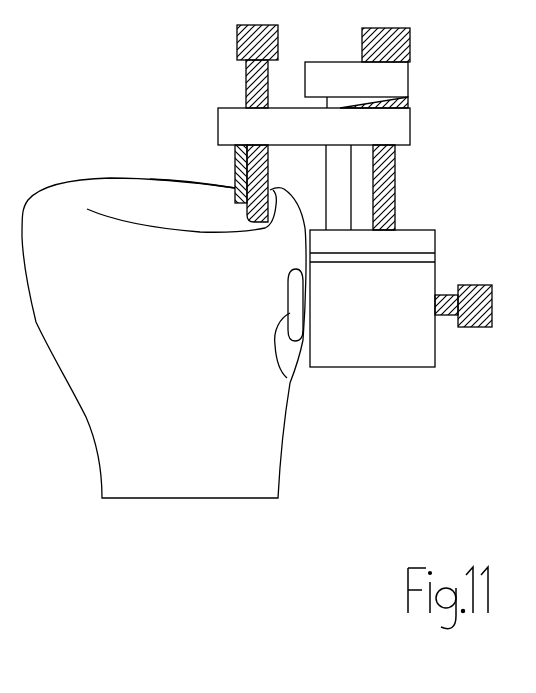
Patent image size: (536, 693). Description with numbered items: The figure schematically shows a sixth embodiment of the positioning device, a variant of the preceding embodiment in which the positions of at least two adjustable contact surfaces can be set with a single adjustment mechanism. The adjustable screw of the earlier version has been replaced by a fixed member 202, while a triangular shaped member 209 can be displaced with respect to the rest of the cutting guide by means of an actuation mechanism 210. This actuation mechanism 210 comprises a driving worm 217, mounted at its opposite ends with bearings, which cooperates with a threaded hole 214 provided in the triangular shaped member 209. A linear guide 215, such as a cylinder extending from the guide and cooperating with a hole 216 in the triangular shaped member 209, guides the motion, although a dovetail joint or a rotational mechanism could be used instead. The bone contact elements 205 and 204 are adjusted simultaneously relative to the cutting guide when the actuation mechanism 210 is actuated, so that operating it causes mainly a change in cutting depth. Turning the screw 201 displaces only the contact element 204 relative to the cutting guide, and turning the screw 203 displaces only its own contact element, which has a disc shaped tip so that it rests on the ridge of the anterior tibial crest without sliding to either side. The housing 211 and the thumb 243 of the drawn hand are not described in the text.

The screw 201 is at (268, 70).
The fixed member 202 is at (233, 160).
The screw 203 is at (446, 318).
The bone contact element 204 is at (275, 200).
The bone contact element 205 is at (237, 200).
The triangular shaped member 209 is at (410, 128).
The actuation mechanism 210 is at (409, 71).
The housing 211 is at (395, 357).
The threaded hole 214 is at (398, 150).
The linear guide 215 is at (342, 187).
The hole 216 is at (408, 100).
The driving worm 217 is at (395, 205).
The thumb 243 is at (287, 374).